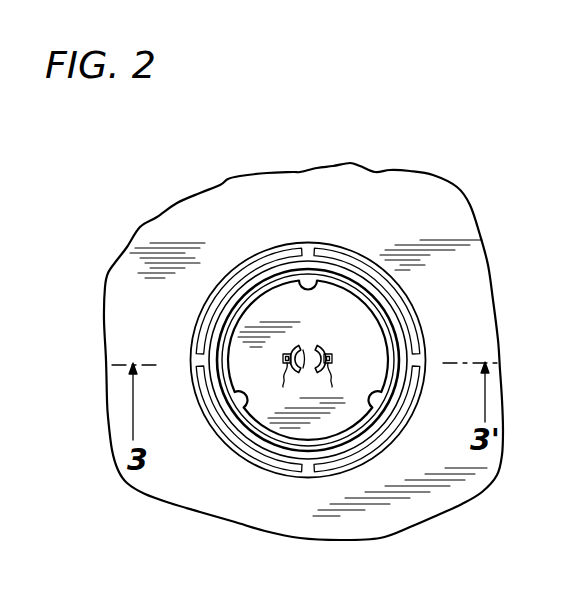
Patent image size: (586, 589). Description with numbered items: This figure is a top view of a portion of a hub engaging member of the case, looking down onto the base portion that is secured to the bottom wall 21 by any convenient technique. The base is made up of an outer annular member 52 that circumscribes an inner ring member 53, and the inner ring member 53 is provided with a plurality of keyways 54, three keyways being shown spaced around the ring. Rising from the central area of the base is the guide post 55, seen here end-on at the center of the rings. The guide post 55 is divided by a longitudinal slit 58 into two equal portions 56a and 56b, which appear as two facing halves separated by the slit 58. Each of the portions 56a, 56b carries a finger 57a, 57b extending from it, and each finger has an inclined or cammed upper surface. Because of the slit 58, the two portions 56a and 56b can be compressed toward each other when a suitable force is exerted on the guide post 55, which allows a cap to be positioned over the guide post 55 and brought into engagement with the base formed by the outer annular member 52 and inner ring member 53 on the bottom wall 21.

The bottom wall 21 is at (226, 514).
The outer annular member 52 is at (411, 299).
The inner ring member 53 is at (243, 306).
The keyways 54 is at (308, 284).
The guide post 55 is at (343, 361).
The first portion of guide post 56a is at (299, 378).
The second portion of guide post 56b is at (320, 347).
The finger 57a is at (265, 372).
The finger 57b is at (347, 372).
The longitudinal slit 58 is at (304, 346).